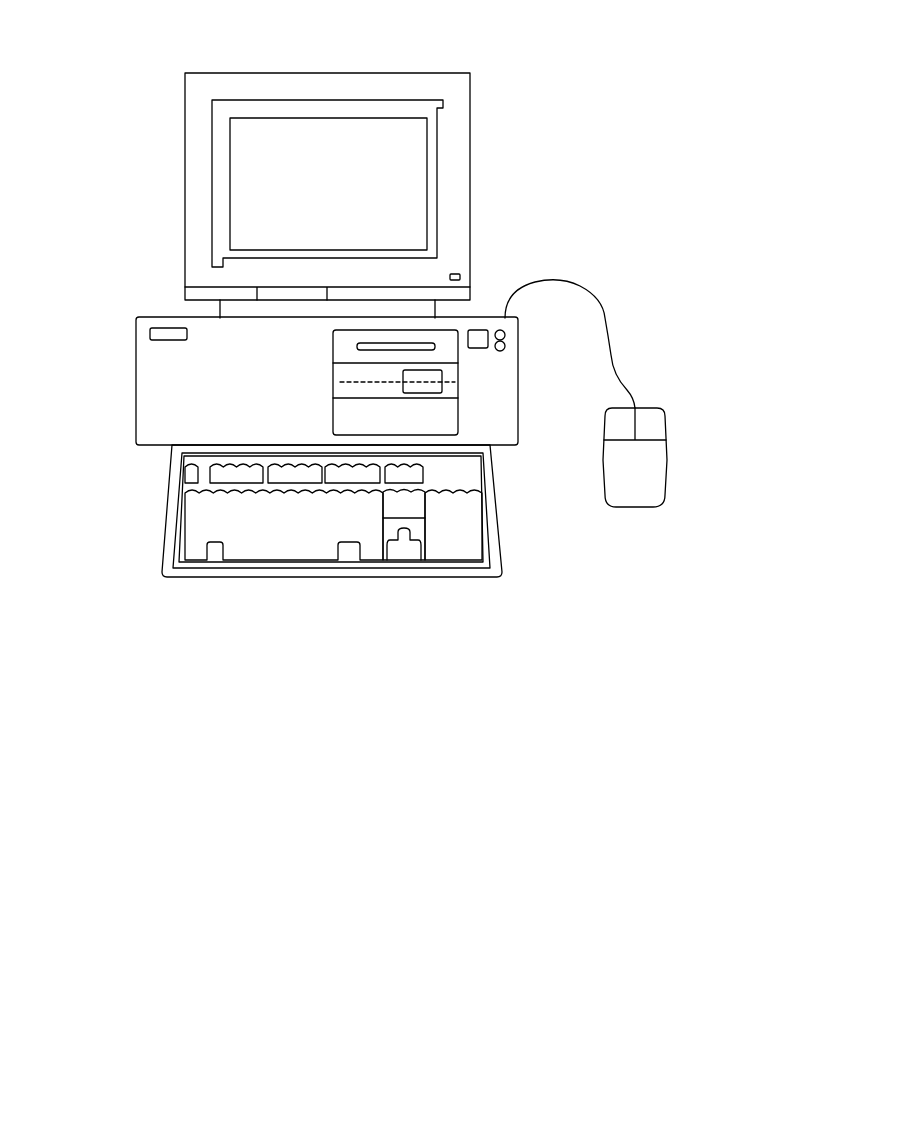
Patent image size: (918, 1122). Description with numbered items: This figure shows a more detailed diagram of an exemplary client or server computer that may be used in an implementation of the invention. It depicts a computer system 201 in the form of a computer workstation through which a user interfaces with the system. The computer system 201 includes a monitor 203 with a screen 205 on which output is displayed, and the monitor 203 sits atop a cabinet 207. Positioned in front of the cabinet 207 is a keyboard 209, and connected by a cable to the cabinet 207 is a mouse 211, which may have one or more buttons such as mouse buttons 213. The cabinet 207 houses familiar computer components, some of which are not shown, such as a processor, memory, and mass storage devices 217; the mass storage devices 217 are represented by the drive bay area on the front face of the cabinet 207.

The computer system 201 is at (495, 52).
The monitor 203 is at (470, 167).
The screen 205 is at (247, 172).
The cabinet 207 is at (163, 322).
The keyboard 209 is at (210, 577).
The mouse 211 is at (637, 495).
The mouse buttons 213 is at (648, 430).
The mass storage devices 217 is at (452, 330).